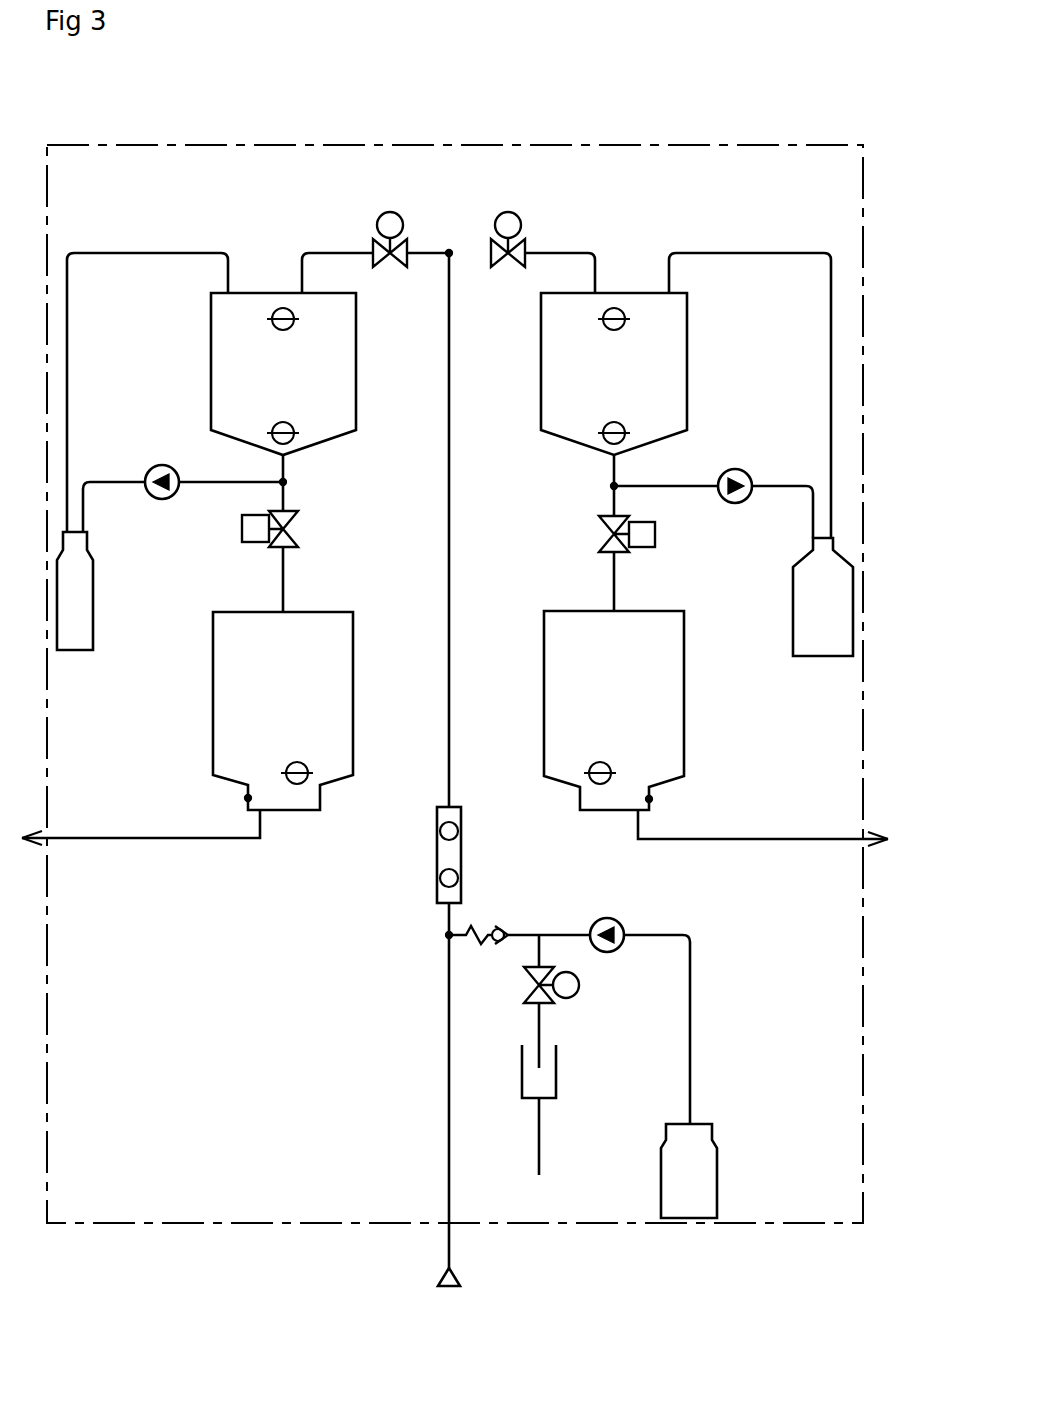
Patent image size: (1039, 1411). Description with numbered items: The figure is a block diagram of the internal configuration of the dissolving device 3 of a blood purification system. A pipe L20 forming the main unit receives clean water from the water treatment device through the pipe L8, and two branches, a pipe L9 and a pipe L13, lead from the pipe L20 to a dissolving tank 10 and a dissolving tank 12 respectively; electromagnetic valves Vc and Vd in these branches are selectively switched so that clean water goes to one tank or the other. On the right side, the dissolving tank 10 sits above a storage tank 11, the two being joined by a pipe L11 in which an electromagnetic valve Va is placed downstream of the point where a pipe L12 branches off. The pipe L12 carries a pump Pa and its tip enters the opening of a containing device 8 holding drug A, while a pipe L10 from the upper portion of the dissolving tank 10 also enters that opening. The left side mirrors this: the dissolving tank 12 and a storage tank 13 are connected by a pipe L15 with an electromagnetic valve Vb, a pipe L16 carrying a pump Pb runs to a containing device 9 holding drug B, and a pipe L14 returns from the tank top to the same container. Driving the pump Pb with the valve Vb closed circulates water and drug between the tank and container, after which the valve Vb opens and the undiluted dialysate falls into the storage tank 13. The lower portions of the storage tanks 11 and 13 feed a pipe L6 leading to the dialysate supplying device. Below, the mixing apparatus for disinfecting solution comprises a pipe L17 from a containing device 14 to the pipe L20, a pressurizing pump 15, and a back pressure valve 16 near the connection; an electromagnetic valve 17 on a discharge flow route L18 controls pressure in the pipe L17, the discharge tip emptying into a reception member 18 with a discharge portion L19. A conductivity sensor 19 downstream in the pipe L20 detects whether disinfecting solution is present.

The dissolving device 3 is at (133, 143).
The containing device 8 is at (792, 600).
The containing device 9 is at (94, 581).
The dissolving tank 10 is at (687, 351).
The storage tank 11 is at (685, 731).
The dissolving tank 12 is at (211, 345).
The storage tank 13 is at (212, 716).
The containing device 14 is at (718, 1186).
The pressurizing pump 15 is at (607, 917).
The back pressure valve 16 is at (494, 916).
The electromagnetic valve 17 is at (580, 986).
The reception member 18 is at (557, 1083).
The conductivity sensor 19 is at (436, 848).
The pipe L6 is at (454, 825).
The pipe L8 is at (452, 1295).
The pipe L9 is at (564, 252).
The pipe L10 is at (725, 252).
The pipe L11 is at (612, 582).
The pipe L12 is at (778, 484).
The pipe L13 is at (328, 252).
The pipe L14 is at (158, 252).
The pipe L15 is at (285, 582).
The pipe L16 is at (105, 478).
The pipe L17 is at (658, 933).
The discharge flow route L18 is at (541, 1030).
The discharge portion L19 is at (541, 1145).
The pipe L20 is at (452, 465).
The electromagnetic valve Va is at (656, 545).
The electromagnetic valve Vb is at (241, 536).
The electromagnetic valve Vc is at (508, 211).
The electromagnetic valve Vd is at (390, 211).
The pump Pa is at (737, 468).
The pump Pb is at (154, 467).